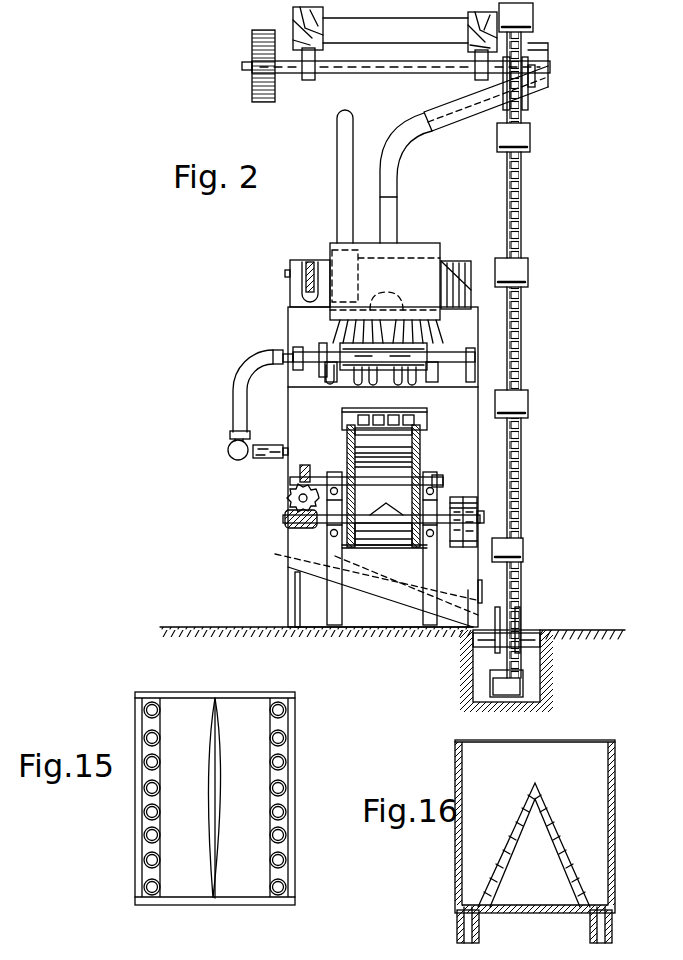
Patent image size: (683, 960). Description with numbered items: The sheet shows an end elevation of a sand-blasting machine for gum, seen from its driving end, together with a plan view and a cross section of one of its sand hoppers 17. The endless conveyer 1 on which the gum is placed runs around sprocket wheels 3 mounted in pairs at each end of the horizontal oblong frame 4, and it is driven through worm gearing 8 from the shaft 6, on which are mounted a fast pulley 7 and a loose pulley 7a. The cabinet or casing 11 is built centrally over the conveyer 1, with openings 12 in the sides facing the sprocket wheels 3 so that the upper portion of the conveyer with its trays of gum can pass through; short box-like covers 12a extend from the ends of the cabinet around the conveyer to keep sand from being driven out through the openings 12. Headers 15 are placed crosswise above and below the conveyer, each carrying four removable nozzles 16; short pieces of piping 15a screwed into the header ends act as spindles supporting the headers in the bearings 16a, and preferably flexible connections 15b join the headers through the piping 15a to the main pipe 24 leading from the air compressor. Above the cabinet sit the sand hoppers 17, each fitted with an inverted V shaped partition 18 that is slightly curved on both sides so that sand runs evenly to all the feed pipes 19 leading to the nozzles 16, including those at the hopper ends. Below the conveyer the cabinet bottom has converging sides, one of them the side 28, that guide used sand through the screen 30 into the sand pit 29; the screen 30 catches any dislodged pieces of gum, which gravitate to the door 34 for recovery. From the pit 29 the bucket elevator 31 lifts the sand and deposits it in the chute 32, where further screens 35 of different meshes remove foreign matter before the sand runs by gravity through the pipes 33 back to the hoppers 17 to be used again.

In FIG. 2, the endless conveyer 1 is at (412, 461).
In FIG. 2, the sprocket wheels 3 is at (346, 476).
In FIG. 2, the horizontal oblong frame 4 is at (410, 571).
In FIG. 2, the shaft 6 is at (485, 518).
In FIG. 2, the fast pulley 7 is at (460, 548).
In FIG. 2, the loose pulley 7a is at (470, 510).
In FIG. 2, the worm gearing 8 is at (288, 506).
In FIG. 2, the cabinet or casing 11 is at (468, 468).
In FIG. 2, the openings 12 is at (360, 424).
In FIG. 2, the box-like covers 12a is at (448, 430).
In FIG. 2, the headers 15 is at (328, 370).
In FIG. 2, the short pieces of piping 15a is at (296, 352).
In FIG. 2, the connections 15b is at (240, 404).
In FIG. 2, the removable nozzles 16 is at (336, 378).
In FIG. 2, the bearings 16a is at (319, 366).
In FIG. 2, the sand hoppers 17 is at (385, 281).
In FIG. 15, the sand hoppers 17 is at (255, 697).
In FIG. 16, the sand hoppers 17 is at (455, 851).
In FIG. 15, the inverted V shaped partition 18 is at (218, 880).
In FIG. 16, the inverted V shaped partition 18 is at (558, 828).
In FIG. 2, the feed pipes 19 is at (346, 341).
In FIG. 15, the feed pipes 19 is at (141, 743).
In FIG. 16, the feed pipes 19 is at (477, 929).
In FIG. 2, the main pipe 24 is at (235, 461).
In FIG. 2, the side 28 is at (380, 597).
In FIG. 2, the sand pit 29 is at (528, 675).
In FIG. 2, the screen 30 is at (356, 572).
In FIG. 2, the bucket elevator 31 is at (521, 230).
In FIG. 2, the chute 32 is at (537, 90).
In FIG. 2, the pipes 33 is at (397, 194).
In FIG. 2, the door 34 is at (482, 591).
In FIG. 2, the screens 35 is at (440, 112).